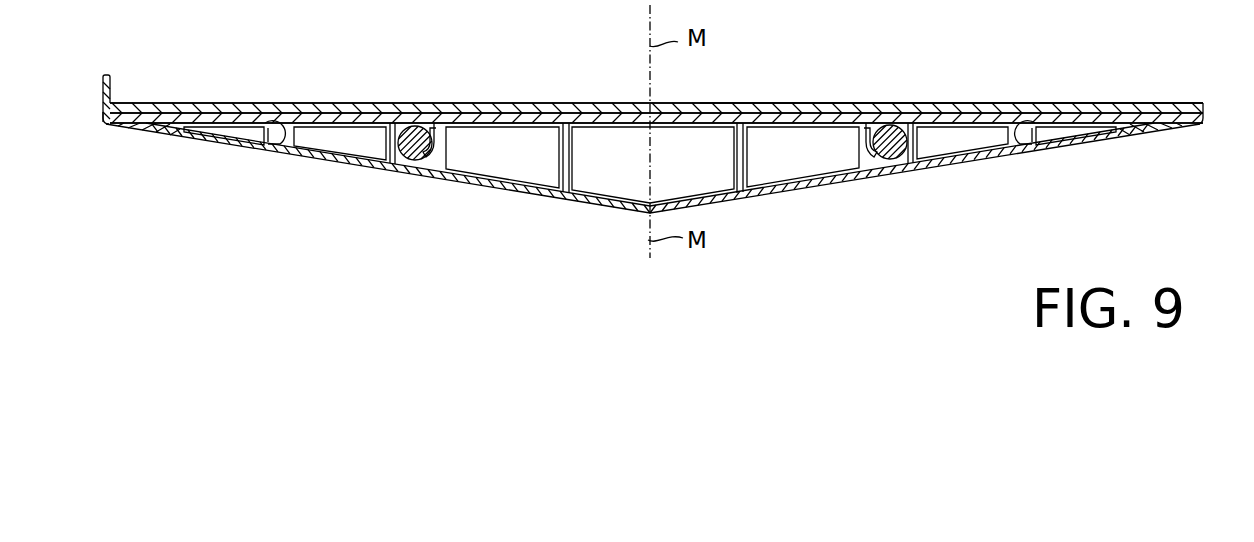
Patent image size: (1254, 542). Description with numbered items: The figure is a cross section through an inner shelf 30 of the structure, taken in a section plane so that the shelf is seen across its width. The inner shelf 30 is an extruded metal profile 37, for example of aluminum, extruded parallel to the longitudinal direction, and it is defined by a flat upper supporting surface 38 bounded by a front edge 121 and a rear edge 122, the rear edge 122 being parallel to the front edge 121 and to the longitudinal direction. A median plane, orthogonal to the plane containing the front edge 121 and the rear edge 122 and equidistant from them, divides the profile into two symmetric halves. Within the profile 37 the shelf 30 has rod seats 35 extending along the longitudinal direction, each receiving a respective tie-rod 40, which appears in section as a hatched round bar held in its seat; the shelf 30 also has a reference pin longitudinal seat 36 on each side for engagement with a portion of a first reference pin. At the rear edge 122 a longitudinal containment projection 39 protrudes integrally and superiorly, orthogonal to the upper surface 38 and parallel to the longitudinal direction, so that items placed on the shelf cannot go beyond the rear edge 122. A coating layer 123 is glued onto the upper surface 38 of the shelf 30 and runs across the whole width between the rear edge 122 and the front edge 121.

The inner shelf 30 is at (770, 96).
The rod seat 35 is at (445, 138).
The reference pin longitudinal seat 36 is at (258, 135).
The extruded metal profile 37 is at (803, 192).
The upper supporting surface 38 is at (488, 101).
The longitudinal containment projection 39 is at (113, 88).
The tie-rod 40 is at (410, 162).
The front edge 121 is at (1205, 124).
The rear edge 122 is at (100, 126).
The coating layer 123 is at (952, 101).